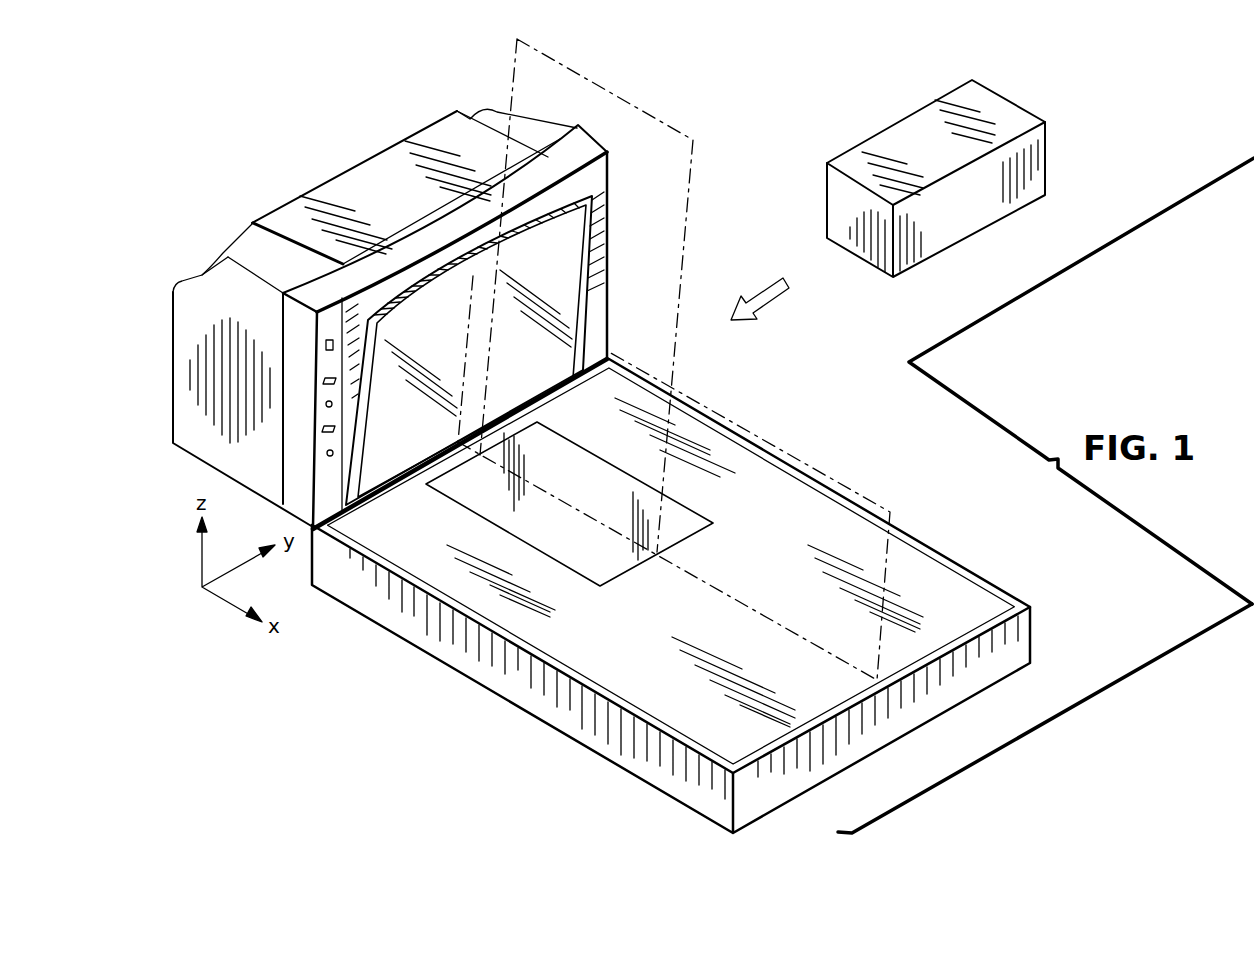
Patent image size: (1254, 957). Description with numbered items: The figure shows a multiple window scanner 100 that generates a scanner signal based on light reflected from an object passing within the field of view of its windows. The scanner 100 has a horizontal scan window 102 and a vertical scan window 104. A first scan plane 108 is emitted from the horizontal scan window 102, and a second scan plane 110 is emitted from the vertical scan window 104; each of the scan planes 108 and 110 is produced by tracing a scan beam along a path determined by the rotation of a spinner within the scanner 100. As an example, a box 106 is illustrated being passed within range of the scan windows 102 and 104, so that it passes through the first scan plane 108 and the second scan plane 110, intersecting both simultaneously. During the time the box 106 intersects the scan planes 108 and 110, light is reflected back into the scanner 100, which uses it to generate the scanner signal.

The scanner 100 is at (285, 137).
The horizontal scan window 102 is at (600, 567).
The vertical scan window 104 is at (375, 470).
The box 106 is at (962, 223).
The first scan plane 108 is at (674, 132).
The second scan plane 110 is at (826, 473).